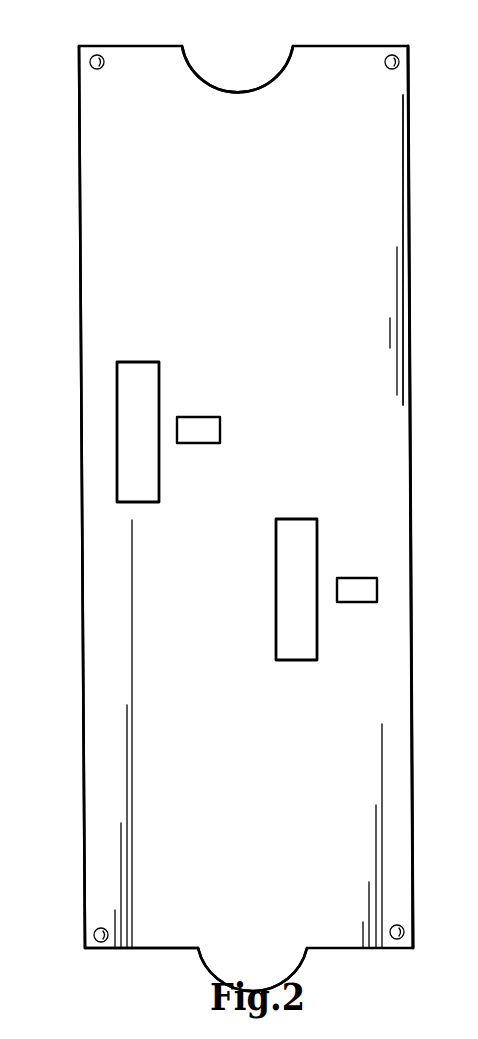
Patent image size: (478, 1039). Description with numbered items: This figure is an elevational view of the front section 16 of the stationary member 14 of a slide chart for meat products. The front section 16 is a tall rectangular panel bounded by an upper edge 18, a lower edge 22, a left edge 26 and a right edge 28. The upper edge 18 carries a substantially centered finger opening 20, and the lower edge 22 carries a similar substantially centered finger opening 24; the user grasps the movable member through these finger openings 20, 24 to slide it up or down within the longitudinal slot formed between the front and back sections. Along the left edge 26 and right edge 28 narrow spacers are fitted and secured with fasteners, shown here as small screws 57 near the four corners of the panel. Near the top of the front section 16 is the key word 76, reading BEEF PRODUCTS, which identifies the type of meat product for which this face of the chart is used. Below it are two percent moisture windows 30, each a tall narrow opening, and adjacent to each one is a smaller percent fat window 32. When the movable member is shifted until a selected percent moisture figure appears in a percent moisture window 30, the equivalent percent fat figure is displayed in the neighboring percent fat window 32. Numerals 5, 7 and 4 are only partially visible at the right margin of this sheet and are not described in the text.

The upper edge 18 is at (325, 46).
The finger opening 20 is at (218, 64).
The lower edge 22 is at (150, 950).
The finger opening 24 is at (284, 946).
The left edge 26 is at (82, 620).
The right edge 28 is at (412, 618).
The percent moisture window 30 is at (130, 396).
The percent fat window 32 is at (193, 430).
The screw 57 is at (89, 63).
The key word 76 is at (115, 178).
The stationary member 14 is at (383, 88).
The front section 16 is at (440, 250).
The partially visible numeral 5 is at (468, 55).
The partially visible numeral 7 is at (471, 213).
The partially visible numeral 4 is at (472, 751).